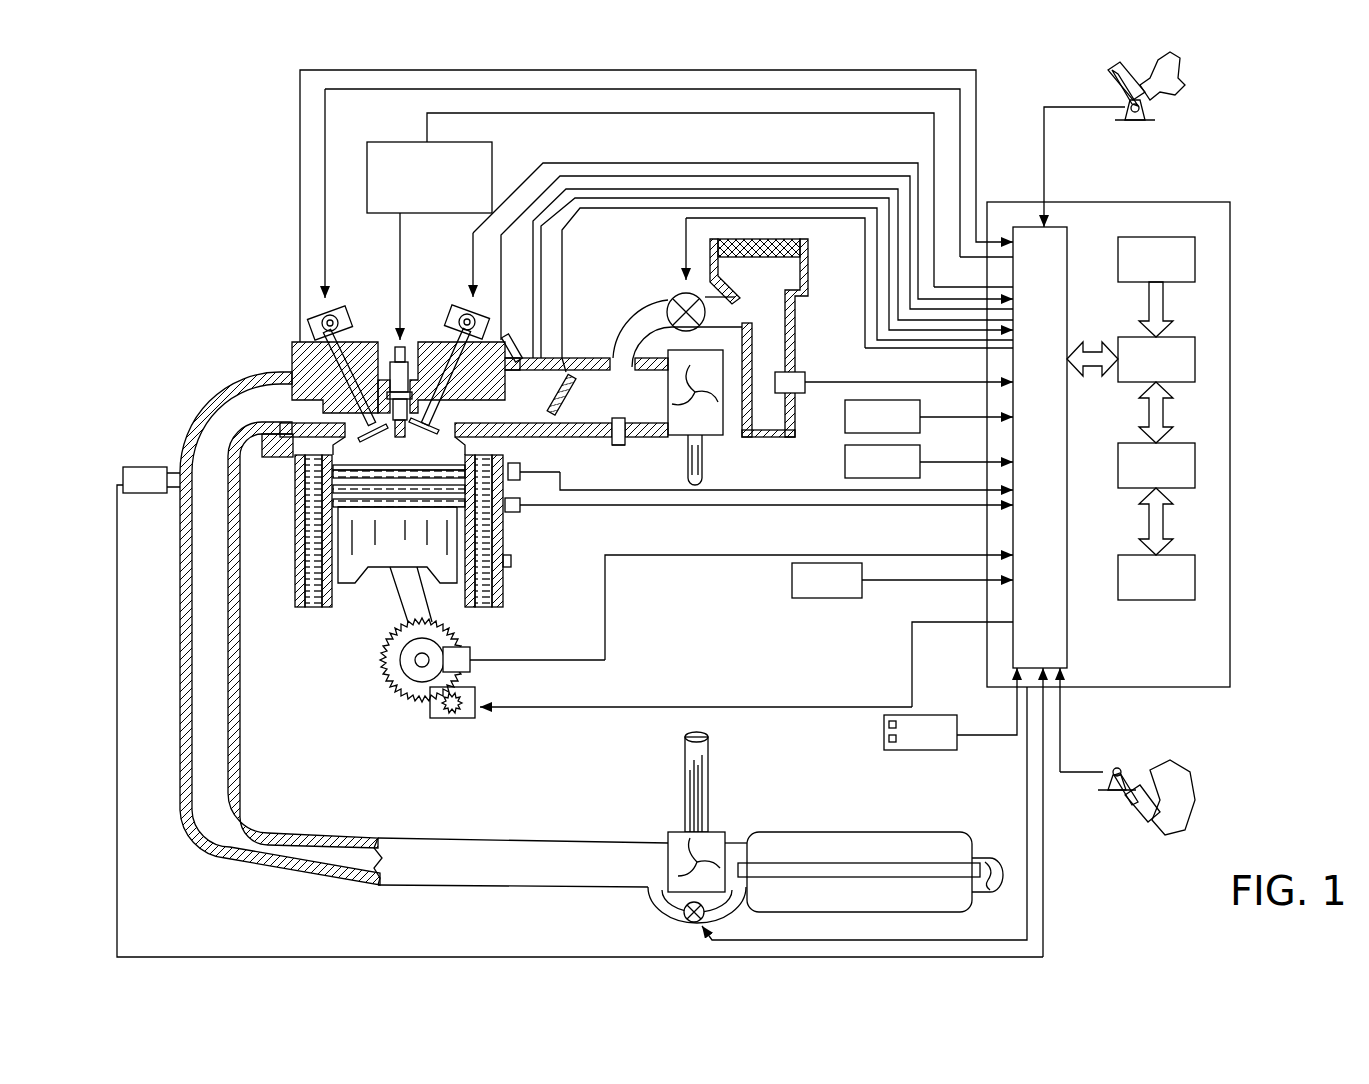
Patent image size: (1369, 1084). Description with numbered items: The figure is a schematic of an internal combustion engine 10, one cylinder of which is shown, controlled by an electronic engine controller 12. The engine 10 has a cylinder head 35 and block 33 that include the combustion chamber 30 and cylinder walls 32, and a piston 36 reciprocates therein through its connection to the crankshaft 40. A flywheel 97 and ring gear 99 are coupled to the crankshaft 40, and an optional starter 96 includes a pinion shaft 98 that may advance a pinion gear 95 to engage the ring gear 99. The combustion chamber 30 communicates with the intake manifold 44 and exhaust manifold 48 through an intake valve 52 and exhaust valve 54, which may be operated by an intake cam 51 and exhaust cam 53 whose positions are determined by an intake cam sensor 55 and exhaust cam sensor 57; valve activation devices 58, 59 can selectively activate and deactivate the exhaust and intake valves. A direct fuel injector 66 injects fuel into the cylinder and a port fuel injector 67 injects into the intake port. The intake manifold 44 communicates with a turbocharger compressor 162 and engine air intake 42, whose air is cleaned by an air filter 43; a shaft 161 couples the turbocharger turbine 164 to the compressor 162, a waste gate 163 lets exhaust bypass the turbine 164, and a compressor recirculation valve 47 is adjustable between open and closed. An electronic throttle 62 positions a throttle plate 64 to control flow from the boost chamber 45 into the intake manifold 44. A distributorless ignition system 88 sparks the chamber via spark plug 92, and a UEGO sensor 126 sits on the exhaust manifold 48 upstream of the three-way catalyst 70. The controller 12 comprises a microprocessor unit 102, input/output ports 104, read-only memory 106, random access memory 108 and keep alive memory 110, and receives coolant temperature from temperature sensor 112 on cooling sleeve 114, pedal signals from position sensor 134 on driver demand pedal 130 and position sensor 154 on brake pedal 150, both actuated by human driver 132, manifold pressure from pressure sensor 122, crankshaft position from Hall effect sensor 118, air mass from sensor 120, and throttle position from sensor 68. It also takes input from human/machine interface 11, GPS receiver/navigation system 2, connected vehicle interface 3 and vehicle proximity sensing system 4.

The internal combustion engine 10 is at (222, 287).
The electronic engine controller 12 is at (1232, 205).
The GPS receiver/navigation system 2 is at (929, 416).
The connected vehicle interface 3 is at (929, 461).
The vehicle proximity sensing system 4 is at (950, 709).
The human/machine interface 11 is at (902, 580).
The combustion chamber 30 is at (300, 547).
The cylinder walls 32 is at (340, 602).
The block 33 is at (292, 490).
The cylinder head 35 is at (290, 340).
The piston 36 is at (378, 600).
The crankshaft 40 is at (405, 686).
The engine air intake 42 is at (618, 276).
The air filter 43 is at (783, 258).
The intake manifold 44 is at (534, 413).
The boost chamber 45 is at (640, 413).
The compressor recirculation valve 47 is at (672, 298).
The exhaust manifold 48 is at (272, 416).
The intake cam 51 is at (465, 296).
The intake valve 52 is at (450, 398).
The exhaust cam 53 is at (341, 193).
The exhaust valve 54 is at (340, 380).
The intake cam sensor 55 is at (488, 318).
The exhaust cam sensor 57 is at (314, 308).
The valve activation device 58 is at (341, 323).
The valve activation device 59 is at (458, 332).
The electronic throttle 62 is at (570, 398).
The throttle plate 64 is at (604, 423).
The direct fuel injector 66 is at (522, 474).
The port fuel injector 67 is at (516, 350).
The throttle position sensor 68 is at (565, 360).
The three-way catalyst 70 is at (790, 832).
The distributorless ignition system 88 is at (492, 158).
The spark plug 92 is at (404, 345).
The pinion gear 95 is at (463, 718).
The starter 96 is at (472, 718).
The flywheel 97 is at (385, 667).
The pinion shaft 98 is at (446, 716).
The ring gear 99 is at (412, 702).
The microprocessor unit 102 is at (1196, 360).
The input/output ports 104 is at (1070, 232).
The read-only memory 106 is at (1196, 258).
The random access memory 108 is at (1196, 465).
The keep alive memory 110 is at (1196, 575).
The temperature sensor 112 is at (532, 515).
The cooling sleeve 114 is at (511, 565).
The Hall effect sensor 118 is at (468, 652).
The air mass sensor 120 is at (805, 380).
The pressure sensor 122 is at (606, 440).
The Universal Exhaust Gas Oxygen sensor 126 is at (123, 470).
The driver demand pedal 130 is at (1118, 80).
The human driver 132 is at (1168, 68).
The position sensor 134 is at (1148, 108).
The brake pedal 150 is at (1140, 810).
The position sensor 154 is at (1110, 765).
The shaft 161 is at (686, 466).
The turbocharger compressor 162 is at (708, 436).
The waste gate 163 is at (684, 921).
The turbocharger turbine 164 is at (672, 832).